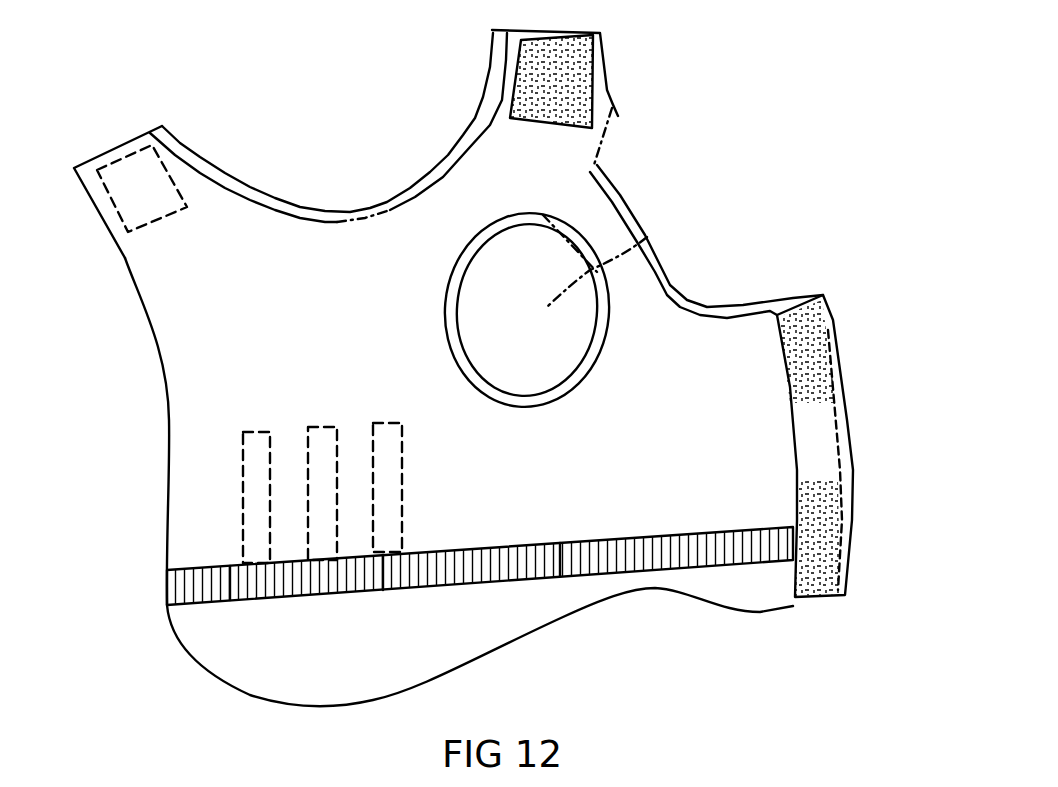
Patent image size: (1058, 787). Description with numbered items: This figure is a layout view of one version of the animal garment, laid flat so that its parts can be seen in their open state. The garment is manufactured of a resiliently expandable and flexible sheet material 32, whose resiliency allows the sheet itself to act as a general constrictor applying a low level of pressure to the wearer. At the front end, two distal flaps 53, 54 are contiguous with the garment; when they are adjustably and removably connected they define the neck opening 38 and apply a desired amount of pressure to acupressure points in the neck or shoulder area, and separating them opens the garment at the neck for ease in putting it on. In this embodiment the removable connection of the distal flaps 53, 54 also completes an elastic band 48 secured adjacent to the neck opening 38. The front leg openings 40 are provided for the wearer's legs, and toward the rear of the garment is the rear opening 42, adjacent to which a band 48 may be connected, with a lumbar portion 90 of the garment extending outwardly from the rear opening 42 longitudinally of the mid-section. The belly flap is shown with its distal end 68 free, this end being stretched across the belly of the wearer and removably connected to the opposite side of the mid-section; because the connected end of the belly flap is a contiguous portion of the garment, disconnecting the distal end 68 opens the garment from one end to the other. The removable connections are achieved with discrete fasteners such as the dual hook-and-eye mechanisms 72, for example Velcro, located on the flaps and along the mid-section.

The resiliently expandable and flexible sheet material 32 is at (190, 302).
The neck opening 38 is at (250, 193).
The front leg openings 40 is at (667, 263).
The rear opening 42 is at (222, 603).
The elastic band 48 is at (334, 212).
The distal flap 53 is at (142, 130).
The distal flap 54 is at (563, 28).
The distal end of belly flap 68 is at (847, 446).
The dual hook-and-eye mechanism 72 is at (132, 175).
The lumbar portion 90 is at (300, 680).